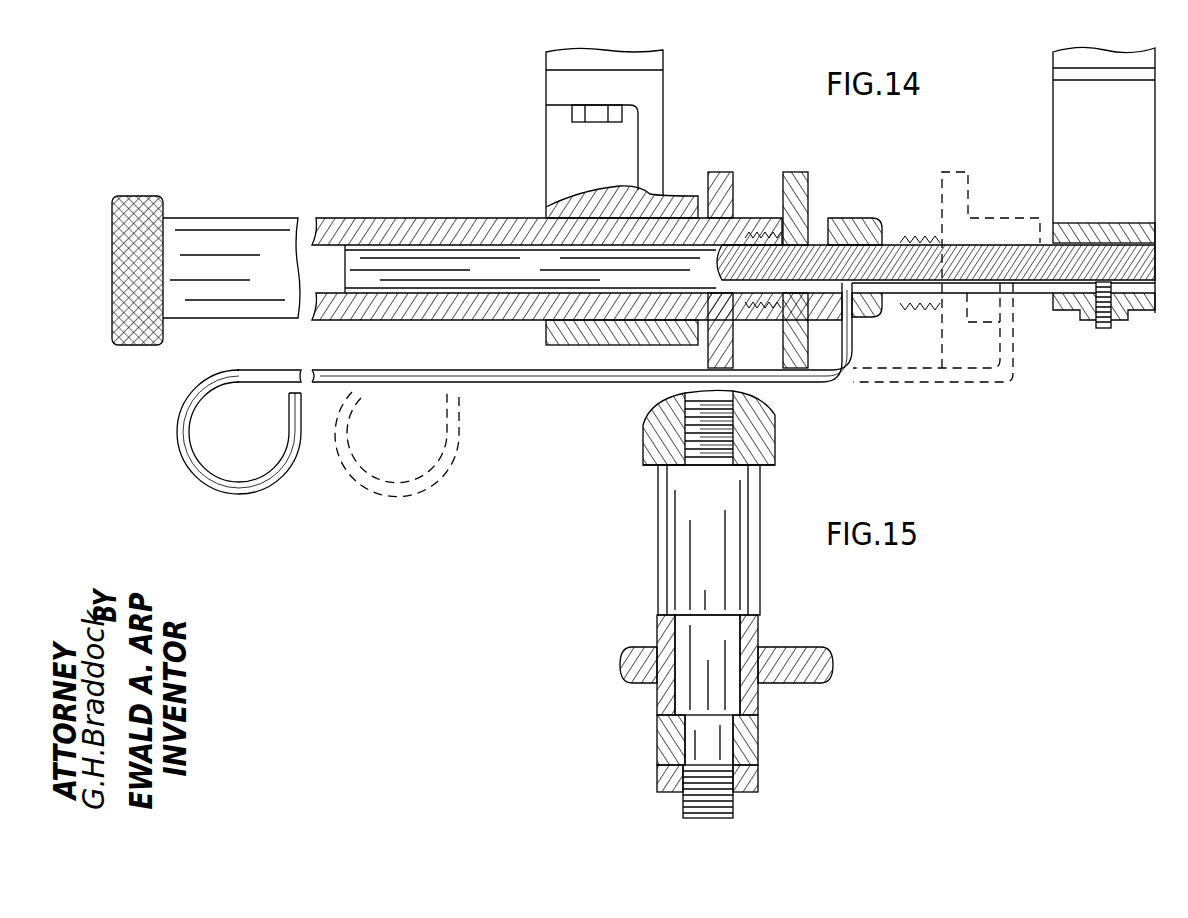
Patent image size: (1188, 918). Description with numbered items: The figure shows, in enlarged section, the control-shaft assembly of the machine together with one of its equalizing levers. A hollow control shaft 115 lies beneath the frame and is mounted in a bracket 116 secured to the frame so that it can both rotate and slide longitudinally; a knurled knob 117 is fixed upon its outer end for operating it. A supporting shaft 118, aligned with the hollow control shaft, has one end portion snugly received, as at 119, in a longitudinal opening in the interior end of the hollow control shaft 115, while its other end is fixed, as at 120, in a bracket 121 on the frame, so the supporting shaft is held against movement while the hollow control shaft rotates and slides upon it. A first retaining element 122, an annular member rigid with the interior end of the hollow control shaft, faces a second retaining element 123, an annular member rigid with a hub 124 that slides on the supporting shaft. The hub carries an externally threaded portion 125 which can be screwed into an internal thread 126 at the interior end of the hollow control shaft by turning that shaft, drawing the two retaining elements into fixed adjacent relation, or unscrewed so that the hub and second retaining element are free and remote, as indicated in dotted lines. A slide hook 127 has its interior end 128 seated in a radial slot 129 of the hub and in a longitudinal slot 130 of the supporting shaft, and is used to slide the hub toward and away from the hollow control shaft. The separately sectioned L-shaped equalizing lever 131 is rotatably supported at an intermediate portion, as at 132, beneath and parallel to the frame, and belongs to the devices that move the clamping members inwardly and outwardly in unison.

In FIG. 14, the hollow control shaft 115 is at (336, 228).
In FIG. 14, the bracket 116 is at (650, 148).
In FIG. 14, the knurled knob 117 is at (133, 213).
In FIG. 14, the supporting shaft 118 is at (815, 262).
In FIG. 14, the end portion of supporting shaft 119 is at (518, 258).
In FIG. 14, the fixed end portion of supporting shaft 120 is at (1104, 287).
In FIG. 14, the bracket 121 is at (1065, 118).
In FIG. 14, the first retaining element 122 is at (722, 185).
In FIG. 14, the second retaining element 123 is at (795, 183).
In FIG. 14, the hub 124 is at (860, 228).
In FIG. 14, the externally threaded portion 125 is at (912, 310).
In FIG. 14, the internal thread 126 is at (752, 228).
In FIG. 14, the slide hook 127 is at (588, 377).
In FIG. 14, the interior end of slide hook 128 is at (850, 353).
In FIG. 14, the radial slot 129 is at (850, 306).
In FIG. 14, the longitudinal slot 130 is at (960, 283).
In FIG. 15, the equalizing lever 131 is at (632, 665).
In FIG. 15, the rotatable support 132 is at (683, 635).